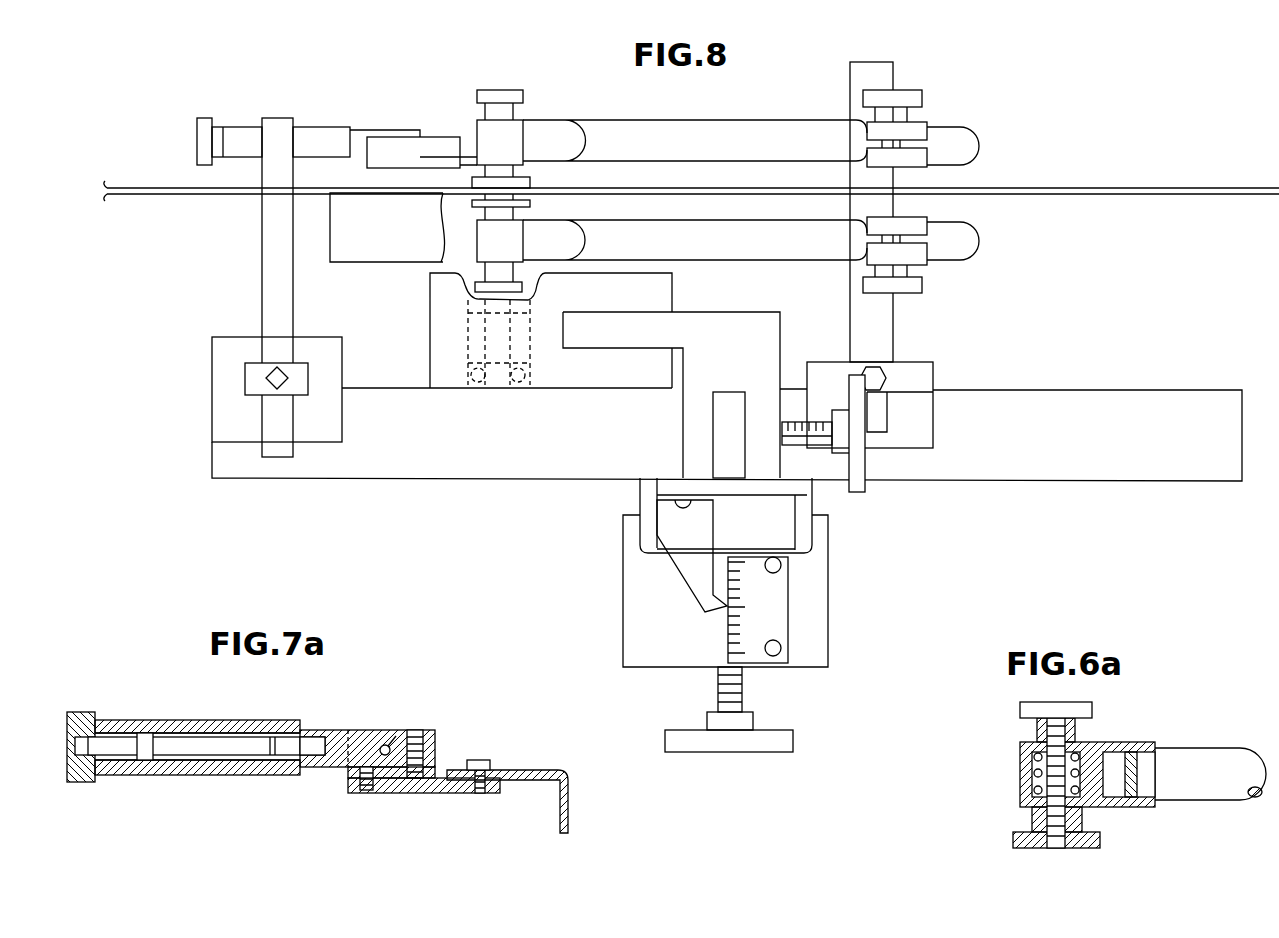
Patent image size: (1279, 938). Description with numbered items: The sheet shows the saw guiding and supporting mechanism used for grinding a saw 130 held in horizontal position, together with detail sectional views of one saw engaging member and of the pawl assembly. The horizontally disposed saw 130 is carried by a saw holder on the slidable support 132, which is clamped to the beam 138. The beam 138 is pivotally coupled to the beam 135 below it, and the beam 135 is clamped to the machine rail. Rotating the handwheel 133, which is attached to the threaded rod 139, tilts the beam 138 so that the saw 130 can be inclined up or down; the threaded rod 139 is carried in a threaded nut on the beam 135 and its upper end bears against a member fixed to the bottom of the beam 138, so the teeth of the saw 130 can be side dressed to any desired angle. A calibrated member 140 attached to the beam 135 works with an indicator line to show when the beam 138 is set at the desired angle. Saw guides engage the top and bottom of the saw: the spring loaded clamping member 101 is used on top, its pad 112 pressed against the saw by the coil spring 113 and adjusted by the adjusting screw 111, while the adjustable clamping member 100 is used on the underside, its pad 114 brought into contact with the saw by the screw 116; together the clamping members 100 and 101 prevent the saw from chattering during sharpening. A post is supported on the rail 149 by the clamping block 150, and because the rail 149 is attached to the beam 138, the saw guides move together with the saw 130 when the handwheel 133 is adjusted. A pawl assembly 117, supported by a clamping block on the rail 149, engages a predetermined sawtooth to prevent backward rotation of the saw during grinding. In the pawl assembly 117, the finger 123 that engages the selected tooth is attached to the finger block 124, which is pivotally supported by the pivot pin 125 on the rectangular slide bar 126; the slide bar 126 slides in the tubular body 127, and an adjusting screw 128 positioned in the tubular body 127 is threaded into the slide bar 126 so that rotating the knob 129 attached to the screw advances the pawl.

In FIG. 8, the adjustable clamping member 100 is at (462, 243).
In FIG. 8, the spring loaded clamping member 101 is at (463, 128).
In FIG. 6A, the spring loaded clamping member 101 is at (1000, 753).
In FIG. 8, the adjusting screw 111 is at (522, 97).
In FIG. 6A, the adjusting screw 111 is at (1088, 711).
In FIG. 8, the pad 112 is at (530, 181).
In FIG. 6A, the pad 112 is at (1015, 837).
In FIG. 6A, the coil spring 113 is at (1034, 779).
In FIG. 8, the pad 114 is at (530, 204).
In FIG. 8, the screw 116 is at (524, 287).
In FIG. 8, the pawl assembly 117 is at (378, 121).
In FIG. 7A, the pawl assembly 117 is at (338, 714).
In FIG. 7A, the finger 123 is at (548, 770).
In FIG. 7A, the finger block 124 is at (441, 793).
In FIG. 7A, the pivot pin 125 is at (390, 745).
In FIG. 7A, the slide bar 126 is at (336, 768).
In FIG. 7A, the tubular body 127 is at (217, 778).
In FIG. 7A, the adjusting screw 128 is at (202, 737).
In FIG. 7A, the knob 129 is at (90, 712).
In FIG. 8, the saw 130 is at (1040, 188).
In FIG. 8, the slidable support 132 is at (693, 408).
In FIG. 8, the handwheel 133 is at (790, 748).
In FIG. 8, the beam 135 is at (623, 624).
In FIG. 8, the beam 138 is at (725, 444).
In FIG. 8, the threaded rod 139 is at (745, 692).
In FIG. 8, the calibrated member 140 is at (728, 622).
In FIG. 8, the rail 149 is at (540, 470).
In FIG. 8, the clamping block 150 is at (928, 376).